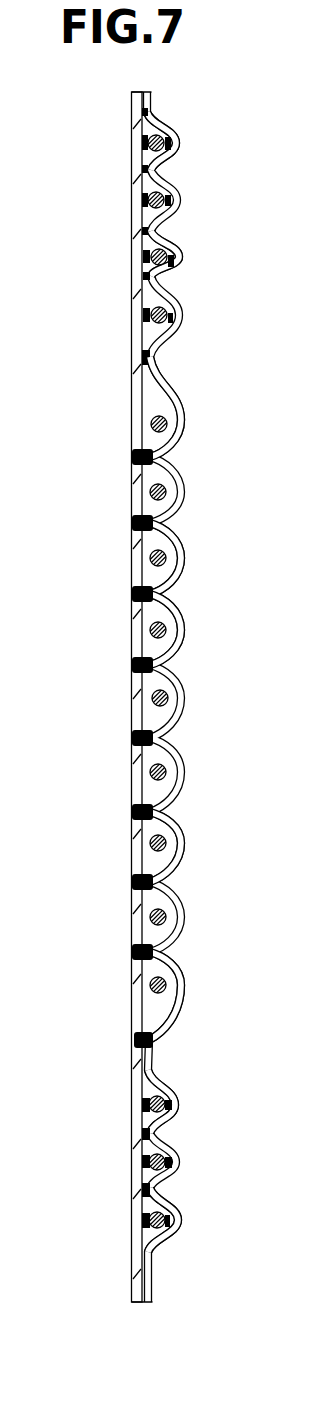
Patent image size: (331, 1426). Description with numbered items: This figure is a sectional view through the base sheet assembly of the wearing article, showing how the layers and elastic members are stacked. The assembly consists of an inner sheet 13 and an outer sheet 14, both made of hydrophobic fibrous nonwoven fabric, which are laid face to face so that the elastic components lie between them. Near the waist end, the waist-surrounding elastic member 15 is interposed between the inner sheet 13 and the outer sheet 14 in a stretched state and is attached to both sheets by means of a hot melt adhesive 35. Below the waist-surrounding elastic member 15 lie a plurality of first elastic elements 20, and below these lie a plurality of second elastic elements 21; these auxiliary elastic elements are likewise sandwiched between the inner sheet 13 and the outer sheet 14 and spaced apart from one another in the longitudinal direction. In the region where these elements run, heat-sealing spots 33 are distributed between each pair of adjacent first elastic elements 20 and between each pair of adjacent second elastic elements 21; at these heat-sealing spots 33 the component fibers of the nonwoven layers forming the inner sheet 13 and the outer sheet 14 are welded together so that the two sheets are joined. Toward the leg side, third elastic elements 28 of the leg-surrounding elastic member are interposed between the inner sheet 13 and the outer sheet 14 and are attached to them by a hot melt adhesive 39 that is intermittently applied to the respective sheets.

The inner sheet 13 is at (135, 172).
The outer sheet 14 is at (178, 178).
The waist-surrounding elastic member 15 is at (178, 136).
The first elastic elements 20 is at (184, 418).
The second elastic elements 21 is at (184, 628).
The third elastic elements 28 is at (178, 1102).
The heat-sealing spots 33 is at (133, 457).
The hot melt adhesive 35 is at (135, 104).
The hot melt adhesive 39 is at (141, 1105).